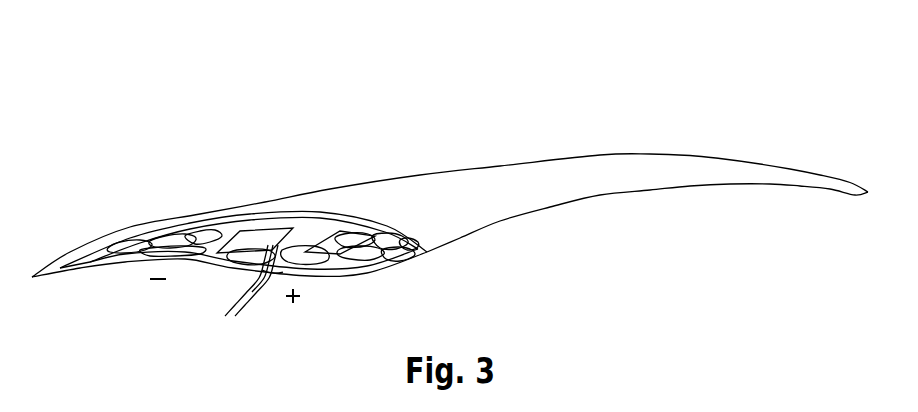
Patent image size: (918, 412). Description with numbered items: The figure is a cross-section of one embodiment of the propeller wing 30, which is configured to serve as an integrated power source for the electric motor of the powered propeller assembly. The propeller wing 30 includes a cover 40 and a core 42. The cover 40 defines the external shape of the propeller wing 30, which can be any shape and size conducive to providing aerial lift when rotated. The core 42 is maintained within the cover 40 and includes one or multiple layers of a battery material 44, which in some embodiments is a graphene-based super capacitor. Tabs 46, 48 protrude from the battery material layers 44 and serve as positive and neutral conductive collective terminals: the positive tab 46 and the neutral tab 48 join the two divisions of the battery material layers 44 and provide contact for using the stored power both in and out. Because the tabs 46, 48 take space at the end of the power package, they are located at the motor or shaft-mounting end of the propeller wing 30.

The propeller wing 30 is at (475, 83).
The cover 40 is at (517, 167).
The core 42 is at (128, 252).
The battery material layers 44 is at (252, 291).
The positive tab 46 is at (332, 229).
The neutral tab 48 is at (210, 220).